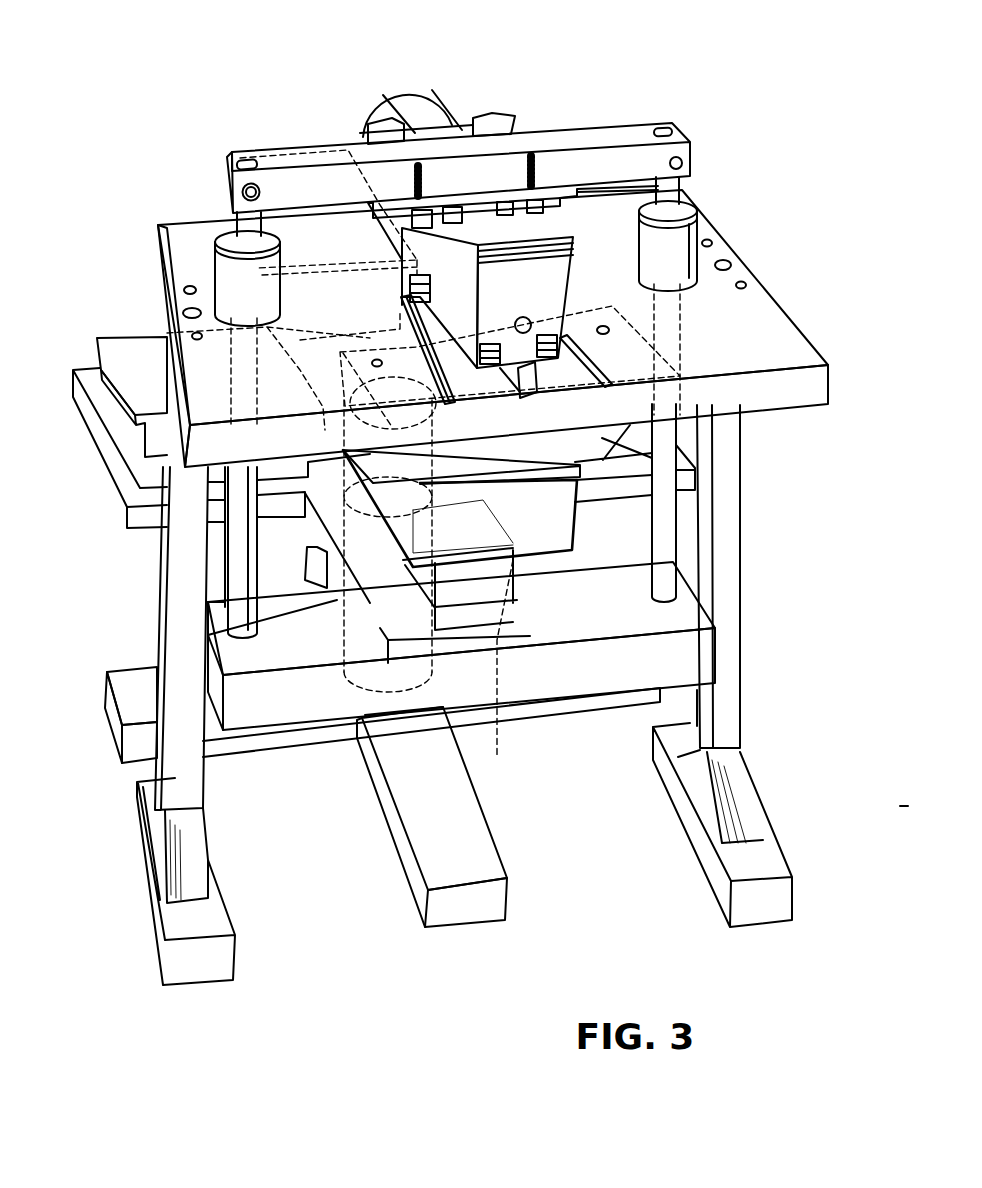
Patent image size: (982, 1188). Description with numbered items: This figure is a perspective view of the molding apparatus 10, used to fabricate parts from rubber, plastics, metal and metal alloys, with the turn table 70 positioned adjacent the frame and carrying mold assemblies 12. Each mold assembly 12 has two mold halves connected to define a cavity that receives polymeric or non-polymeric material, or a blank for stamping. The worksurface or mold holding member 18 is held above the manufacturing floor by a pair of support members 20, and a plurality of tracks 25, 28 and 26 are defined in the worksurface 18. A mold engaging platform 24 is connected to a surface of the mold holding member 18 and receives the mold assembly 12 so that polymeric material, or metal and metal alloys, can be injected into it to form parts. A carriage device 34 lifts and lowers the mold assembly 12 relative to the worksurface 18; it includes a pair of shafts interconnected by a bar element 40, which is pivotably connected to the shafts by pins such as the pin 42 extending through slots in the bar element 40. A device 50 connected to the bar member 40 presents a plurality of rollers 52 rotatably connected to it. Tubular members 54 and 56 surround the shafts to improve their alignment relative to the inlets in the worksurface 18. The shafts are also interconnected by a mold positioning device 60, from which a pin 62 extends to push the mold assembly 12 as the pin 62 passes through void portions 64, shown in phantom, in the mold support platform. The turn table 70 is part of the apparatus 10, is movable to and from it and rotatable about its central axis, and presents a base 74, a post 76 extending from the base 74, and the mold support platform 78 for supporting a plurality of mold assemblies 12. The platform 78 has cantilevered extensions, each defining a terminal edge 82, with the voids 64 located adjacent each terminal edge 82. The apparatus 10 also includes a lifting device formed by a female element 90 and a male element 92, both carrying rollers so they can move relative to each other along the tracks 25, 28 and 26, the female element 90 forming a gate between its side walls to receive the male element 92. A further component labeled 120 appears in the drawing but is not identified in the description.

The molding apparatus 10 is at (176, 112).
The mold assembly 12 is at (135, 355).
The worksurface 18 is at (772, 300).
The support members 20 is at (178, 628).
The mold engaging platform 24 is at (655, 459).
The track 25 is at (570, 328).
The track 26 is at (530, 378).
The track 28 is at (448, 385).
The carriage device 34 is at (603, 142).
The bar element 40 is at (362, 163).
The pin 42 is at (683, 163).
The device 50 is at (562, 200).
The rollers 52 is at (423, 212).
The tubular member 54 is at (686, 233).
The tubular member 56 is at (230, 263).
The mold positioning device 60 is at (609, 675).
The pin 62 is at (483, 583).
The void portions 64 is at (500, 757).
The turn table 70 is at (372, 792).
The base 74 is at (445, 865).
The post 76 is at (347, 617).
The mold support platform 78 is at (90, 376).
The terminal edge 82 is at (103, 462).
The female element 90 is at (497, 117).
The male element 92 is at (514, 288).
The motor 120 is at (405, 98).